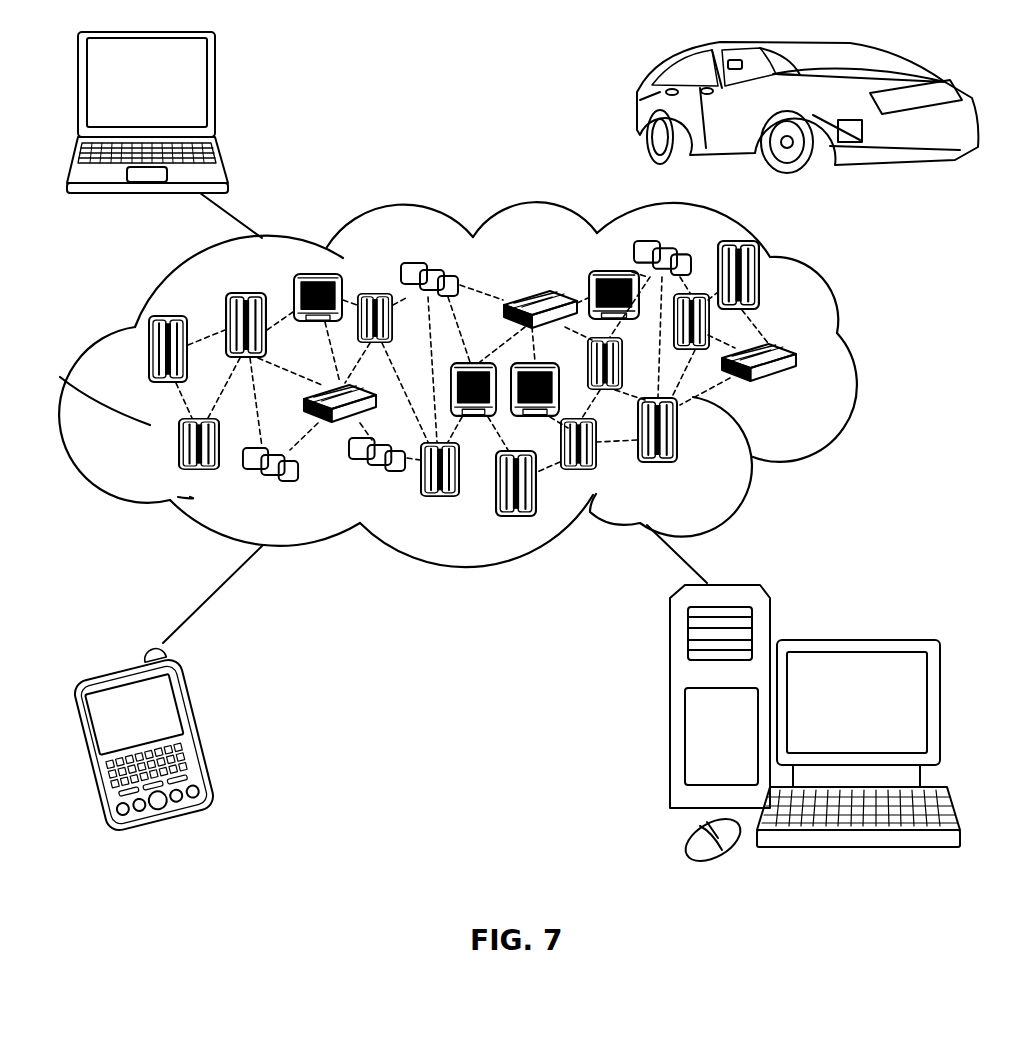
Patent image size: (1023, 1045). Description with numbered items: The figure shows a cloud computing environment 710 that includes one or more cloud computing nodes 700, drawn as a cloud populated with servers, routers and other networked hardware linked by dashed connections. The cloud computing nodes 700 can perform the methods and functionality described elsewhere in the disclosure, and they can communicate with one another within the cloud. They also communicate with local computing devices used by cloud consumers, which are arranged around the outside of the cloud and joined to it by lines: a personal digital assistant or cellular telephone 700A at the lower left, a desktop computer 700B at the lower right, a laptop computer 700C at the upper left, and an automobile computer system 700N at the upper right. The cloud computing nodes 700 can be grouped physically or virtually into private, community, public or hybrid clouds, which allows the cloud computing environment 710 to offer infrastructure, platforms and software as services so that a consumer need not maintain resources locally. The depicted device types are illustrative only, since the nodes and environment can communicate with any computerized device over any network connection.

The cloud computing nodes 700 is at (797, 387).
The cloud computing environment 710 is at (856, 356).
The personal digital assistant (PDA) or cellular telephone 700A is at (200, 733).
The desktop computer 700B is at (853, 640).
The laptop computer 700C is at (214, 93).
The automobile computer system 700N is at (643, 107).